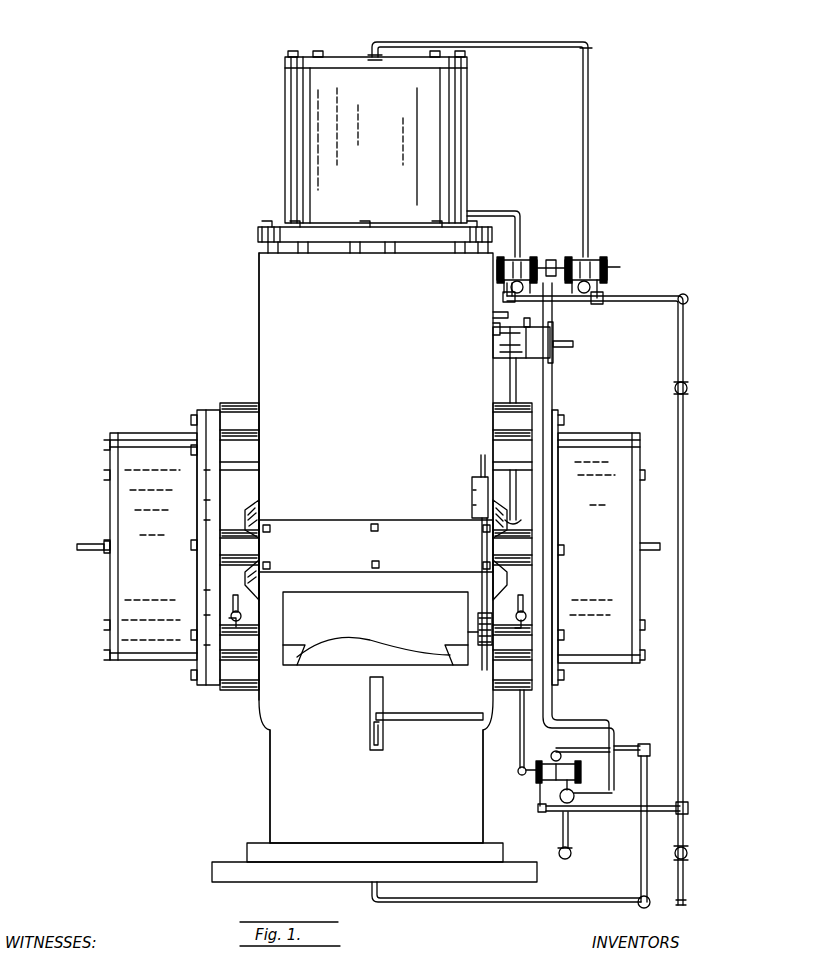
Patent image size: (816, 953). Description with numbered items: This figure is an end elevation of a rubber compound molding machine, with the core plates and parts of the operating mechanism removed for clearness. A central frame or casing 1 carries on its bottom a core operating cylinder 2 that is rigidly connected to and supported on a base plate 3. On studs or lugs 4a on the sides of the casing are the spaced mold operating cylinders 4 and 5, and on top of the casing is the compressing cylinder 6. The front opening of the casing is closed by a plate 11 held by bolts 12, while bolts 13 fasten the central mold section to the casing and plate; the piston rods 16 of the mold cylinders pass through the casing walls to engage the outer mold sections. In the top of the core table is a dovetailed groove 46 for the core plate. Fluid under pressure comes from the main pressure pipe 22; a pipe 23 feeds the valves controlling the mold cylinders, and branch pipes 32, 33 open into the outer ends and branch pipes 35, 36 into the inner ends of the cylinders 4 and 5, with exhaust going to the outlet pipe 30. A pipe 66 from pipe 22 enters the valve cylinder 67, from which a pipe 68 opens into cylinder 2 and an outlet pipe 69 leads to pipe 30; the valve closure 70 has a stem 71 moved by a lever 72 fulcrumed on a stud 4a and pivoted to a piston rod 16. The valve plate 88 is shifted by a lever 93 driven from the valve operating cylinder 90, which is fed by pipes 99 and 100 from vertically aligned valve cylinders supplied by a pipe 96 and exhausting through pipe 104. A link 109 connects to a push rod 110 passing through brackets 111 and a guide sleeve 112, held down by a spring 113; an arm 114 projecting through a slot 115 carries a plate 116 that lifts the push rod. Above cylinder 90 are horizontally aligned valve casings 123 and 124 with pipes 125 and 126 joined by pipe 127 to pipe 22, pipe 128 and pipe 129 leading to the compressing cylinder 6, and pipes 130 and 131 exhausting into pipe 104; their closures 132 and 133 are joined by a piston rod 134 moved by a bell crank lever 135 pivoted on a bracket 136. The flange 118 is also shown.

The central frame or casing 1 is at (270, 355).
The core operating cylinder 2 is at (272, 735).
The base plate 3 is at (232, 865).
The mold operating cylinder 4 is at (172, 655).
The studs or lugs 4a is at (240, 405).
The mold operating cylinder 5 is at (596, 662).
The compressing cylinder 6 is at (292, 145).
The plate 11 is at (338, 520).
The bolts 12 is at (272, 524).
The bolts 13 is at (380, 522).
The piston rods 16 is at (232, 525).
The main pressure pipe 22 is at (688, 903).
The pipe 23 is at (690, 853).
The outlet or exhaust pipe 30 is at (573, 853).
The branch pipe 32 is at (92, 552).
The branch pipe 33 is at (655, 552).
The branch pipe 35 is at (240, 603).
The branch pipe 36 is at (517, 600).
The dovetailed groove 46 is at (303, 655).
The pipe 66 is at (612, 813).
The valve cylinder 67 is at (558, 793).
The pipe 68 is at (622, 742).
The outlet pipe 69 is at (541, 810).
The valve closure or piston 70 is at (580, 768).
The stem or rod 71 is at (540, 778).
The lever 72 is at (520, 725).
The valve plate 88 is at (522, 525).
The valve operating cylinder 90 is at (540, 352).
The lever 93 is at (513, 380).
The pipe 96 is at (690, 392).
The pipe 99 is at (533, 322).
The pipe 100 is at (575, 344).
The pipe 104 is at (555, 390).
The link 109 is at (481, 464).
The push rod 110 is at (482, 670).
The brackets 111 is at (478, 618).
The guide sleeve 112 is at (472, 492).
The spring 113 is at (470, 632).
The arm 114 is at (372, 745).
The slot 115 is at (370, 690).
The plate 116 is at (478, 722).
The flange 118 is at (400, 248).
The valve casing 123 is at (503, 285).
The valve casing 124 is at (612, 265).
The pipe 125 is at (505, 293).
The pipe 126 is at (604, 294).
The pipe 127 is at (628, 306).
The pipe 128 is at (592, 168).
The pipe 129 is at (530, 182).
The pipe 130 is at (540, 262).
The pipe 131 is at (585, 258).
The piston or valve closure 132 is at (497, 267).
The piston or valve closure 133 is at (603, 262).
The piston rod 134 is at (550, 262).
The bell crank lever 135 is at (497, 330).
The bracket 136 is at (500, 318).